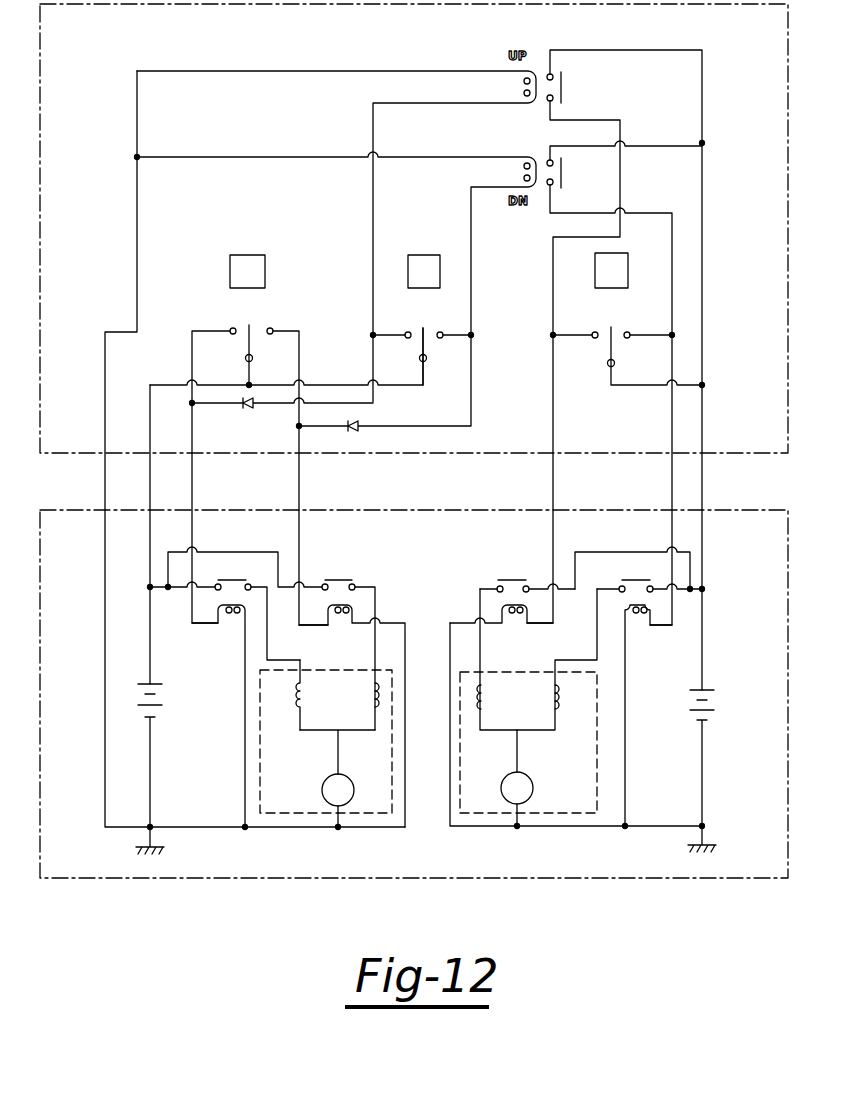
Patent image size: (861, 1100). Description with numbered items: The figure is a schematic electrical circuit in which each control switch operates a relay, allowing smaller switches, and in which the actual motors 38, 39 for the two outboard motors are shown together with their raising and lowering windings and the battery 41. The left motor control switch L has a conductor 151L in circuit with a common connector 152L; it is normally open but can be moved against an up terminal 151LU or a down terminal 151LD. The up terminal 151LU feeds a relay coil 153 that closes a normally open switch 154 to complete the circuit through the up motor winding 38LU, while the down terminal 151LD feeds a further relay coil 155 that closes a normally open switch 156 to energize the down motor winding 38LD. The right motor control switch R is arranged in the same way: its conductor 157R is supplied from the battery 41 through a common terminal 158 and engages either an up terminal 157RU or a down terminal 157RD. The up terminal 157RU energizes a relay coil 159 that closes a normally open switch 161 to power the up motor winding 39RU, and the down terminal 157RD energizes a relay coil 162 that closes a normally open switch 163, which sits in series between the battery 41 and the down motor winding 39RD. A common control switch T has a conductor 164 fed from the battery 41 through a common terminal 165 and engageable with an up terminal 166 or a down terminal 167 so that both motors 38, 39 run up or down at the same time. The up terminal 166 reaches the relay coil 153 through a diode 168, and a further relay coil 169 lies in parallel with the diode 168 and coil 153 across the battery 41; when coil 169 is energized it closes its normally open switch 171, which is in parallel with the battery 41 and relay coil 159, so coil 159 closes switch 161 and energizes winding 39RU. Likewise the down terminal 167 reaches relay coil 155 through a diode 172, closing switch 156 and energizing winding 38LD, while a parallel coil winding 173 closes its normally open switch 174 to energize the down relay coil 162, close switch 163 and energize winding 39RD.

The relay coil 169 is at (525, 87).
The normally opened switch 171 is at (564, 88).
The parallel coil winding 173 is at (523, 176).
The normally opened switch 174 is at (564, 170).
The conductor 151L is at (256, 328).
The up terminal 151LU is at (231, 323).
The down terminal 151LD is at (276, 330).
The common connector 152L is at (246, 360).
The diode 168 is at (245, 411).
The diode 172 is at (356, 429).
The conductor 164 is at (428, 341).
The up terminal 166 is at (406, 337).
The down terminal 167 is at (444, 332).
The common terminal 165 is at (427, 361).
The conductor 157R is at (610, 341).
The up terminal 157RU is at (593, 338).
The down terminal 157RD is at (627, 338).
The common terminal 158 is at (612, 368).
The normally open switch 154 is at (229, 577).
The normally opened switch 156 is at (336, 578).
The relay coil 153 is at (227, 614).
The relay coil 155 is at (344, 606).
The normally open switch 161 is at (512, 578).
The normally open switch 163 is at (636, 579).
The relay coil 159 is at (519, 613).
The relay coil 162 is at (641, 613).
The motor 38 is at (328, 804).
The up motor winding 38LU is at (298, 705).
The down motor winding 38LD is at (380, 704).
The motor 39 is at (502, 796).
The up motor winding 39RU is at (480, 710).
The down motor winding 39RD is at (561, 710).
The battery 41 is at (158, 707).